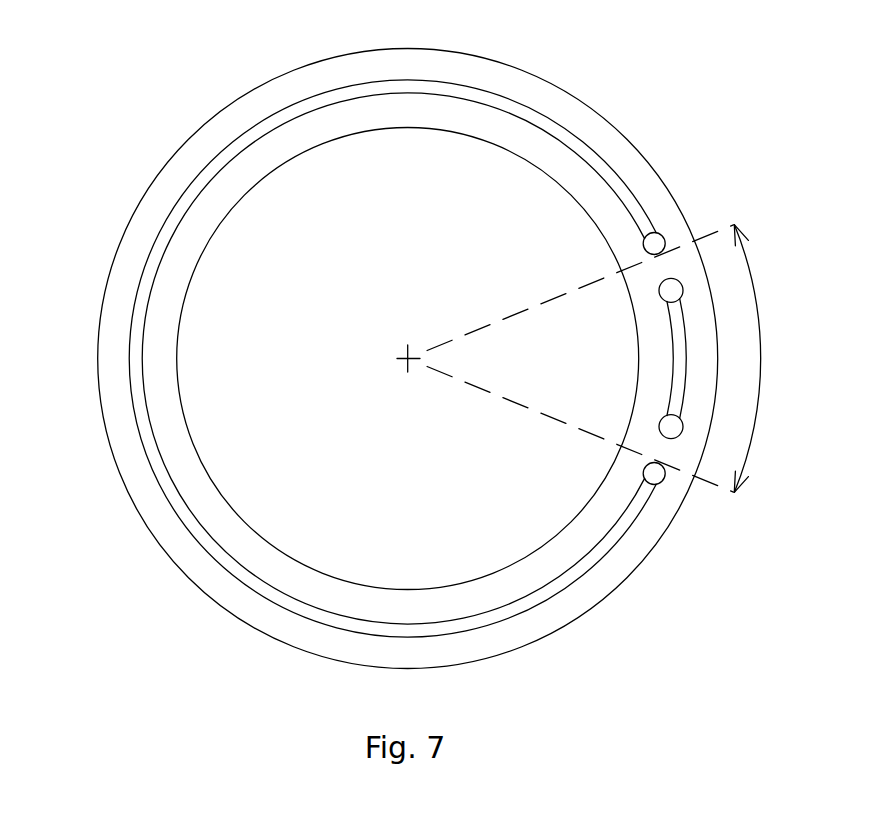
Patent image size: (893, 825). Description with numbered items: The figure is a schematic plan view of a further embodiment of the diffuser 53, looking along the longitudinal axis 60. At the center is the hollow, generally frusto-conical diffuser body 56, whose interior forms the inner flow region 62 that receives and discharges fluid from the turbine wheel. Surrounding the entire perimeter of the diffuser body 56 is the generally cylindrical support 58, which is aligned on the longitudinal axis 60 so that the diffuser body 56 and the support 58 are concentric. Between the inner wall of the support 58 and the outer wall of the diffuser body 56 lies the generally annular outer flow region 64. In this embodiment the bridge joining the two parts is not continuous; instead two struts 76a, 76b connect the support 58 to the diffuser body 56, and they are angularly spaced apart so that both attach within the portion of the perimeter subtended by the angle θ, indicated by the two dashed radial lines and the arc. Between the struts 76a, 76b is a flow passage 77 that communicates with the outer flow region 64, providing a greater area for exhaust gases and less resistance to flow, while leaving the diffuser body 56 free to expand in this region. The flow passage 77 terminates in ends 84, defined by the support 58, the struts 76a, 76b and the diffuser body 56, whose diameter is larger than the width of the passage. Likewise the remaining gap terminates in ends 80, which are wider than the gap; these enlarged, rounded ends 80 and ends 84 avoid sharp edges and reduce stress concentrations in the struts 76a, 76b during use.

The diffuser 53 is at (212, 63).
The diffuser body 56 is at (195, 232).
The support 58 is at (122, 375).
The longitudinal axis 60 is at (408, 358).
The inner flow region 62 is at (290, 512).
The outer flow region 64 is at (165, 482).
The strut 76a is at (698, 245).
The strut 76b is at (698, 470).
The flow passage 77 is at (677, 348).
The ends 80 is at (664, 237).
The ends 84 is at (662, 292).